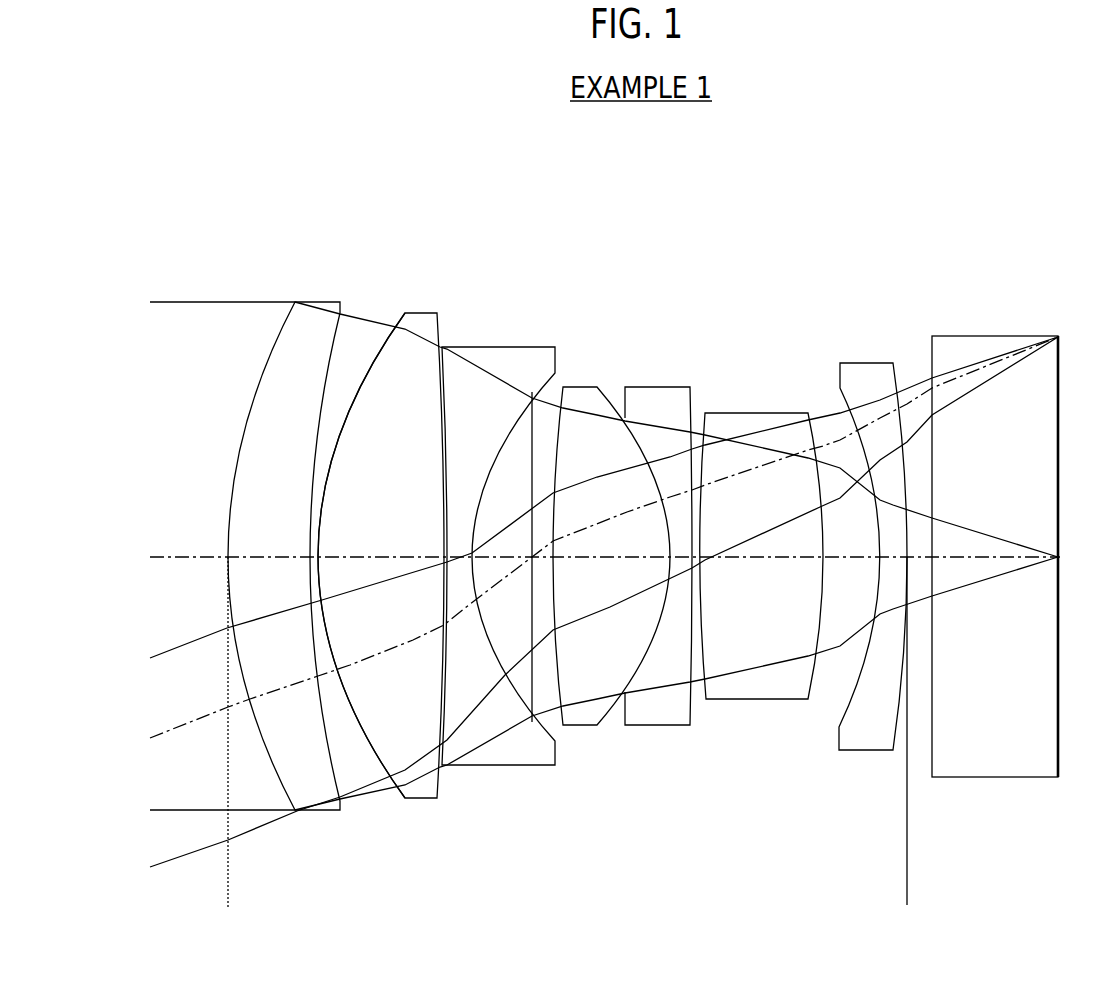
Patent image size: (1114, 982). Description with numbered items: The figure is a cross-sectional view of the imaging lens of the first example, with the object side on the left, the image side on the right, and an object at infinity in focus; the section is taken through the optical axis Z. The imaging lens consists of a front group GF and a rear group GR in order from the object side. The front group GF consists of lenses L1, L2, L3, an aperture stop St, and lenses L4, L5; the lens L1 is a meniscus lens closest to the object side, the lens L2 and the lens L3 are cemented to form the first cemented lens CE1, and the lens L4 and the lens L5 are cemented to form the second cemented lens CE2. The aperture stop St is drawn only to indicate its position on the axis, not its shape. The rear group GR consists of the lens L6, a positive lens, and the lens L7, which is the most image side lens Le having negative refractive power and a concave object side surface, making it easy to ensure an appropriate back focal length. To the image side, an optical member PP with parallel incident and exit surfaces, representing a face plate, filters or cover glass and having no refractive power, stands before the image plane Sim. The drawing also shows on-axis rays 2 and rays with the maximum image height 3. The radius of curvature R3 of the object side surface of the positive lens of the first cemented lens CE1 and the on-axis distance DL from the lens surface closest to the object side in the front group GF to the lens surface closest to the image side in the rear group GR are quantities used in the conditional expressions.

The lens L1 is at (322, 302).
The lens L2 is at (425, 313).
The lens L3 is at (498, 347).
The lens L4 is at (582, 387).
The lens L5 is at (658, 387).
The lens L6 is at (768, 413).
The lens L7 is at (867, 363).
The front group GF is at (673, 173).
The rear group GR is at (897, 173).
The first cemented lens CE1 is at (510, 222).
The second cemented lens CE2 is at (672, 222).
The most image side lens Le is at (893, 222).
The aperture stop St is at (533, 685).
The optical member PP is at (990, 778).
The image plane Sim is at (1062, 742).
The optical axis Z is at (184, 552).
The distance on the optical axis DL is at (907, 880).
The radius of curvature of the object side surface of the positive lens of the first R3 is at (364, 748).
The on-axis rays 2 is at (183, 302).
The rays with the maximum image height 3 is at (191, 853).